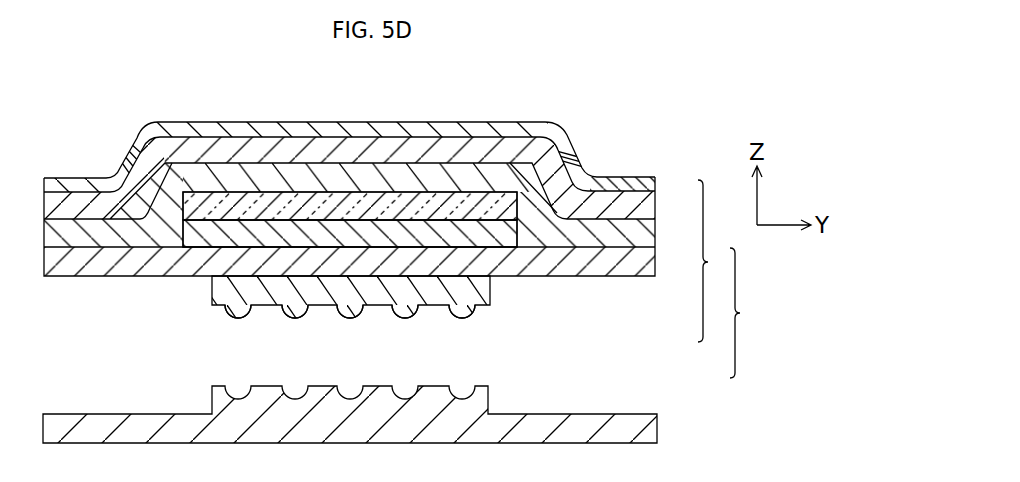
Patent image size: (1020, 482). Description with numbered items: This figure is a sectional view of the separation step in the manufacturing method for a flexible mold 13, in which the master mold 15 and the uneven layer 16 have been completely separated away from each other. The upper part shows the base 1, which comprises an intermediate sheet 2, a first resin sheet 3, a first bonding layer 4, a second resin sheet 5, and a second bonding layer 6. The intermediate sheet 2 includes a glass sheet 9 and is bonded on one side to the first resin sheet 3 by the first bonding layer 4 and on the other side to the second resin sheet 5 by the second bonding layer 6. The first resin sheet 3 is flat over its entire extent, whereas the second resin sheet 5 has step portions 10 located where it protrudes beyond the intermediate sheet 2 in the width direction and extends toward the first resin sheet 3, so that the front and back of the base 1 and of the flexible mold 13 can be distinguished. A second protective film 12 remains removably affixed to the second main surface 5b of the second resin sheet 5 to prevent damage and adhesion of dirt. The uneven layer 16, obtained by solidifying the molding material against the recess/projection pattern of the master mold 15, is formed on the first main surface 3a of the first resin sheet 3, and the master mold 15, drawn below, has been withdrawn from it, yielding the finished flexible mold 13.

The base 1 is at (714, 261).
The intermediate sheet 2 is at (500, 207).
The first resin sheet 3 is at (635, 262).
The first main surface 3a is at (80, 277).
The first bonding layer 4 is at (497, 240).
The second resin sheet 5 is at (640, 203).
The second main surface 5b is at (78, 190).
The second bonding layer 6 is at (640, 233).
The glass sheet 9 is at (438, 252).
The step portions 10 is at (123, 155).
The second protective film 12 is at (348, 128).
The flexible mold 13 is at (753, 313).
The master mold 15 is at (633, 428).
The uneven layer 16 is at (463, 290).